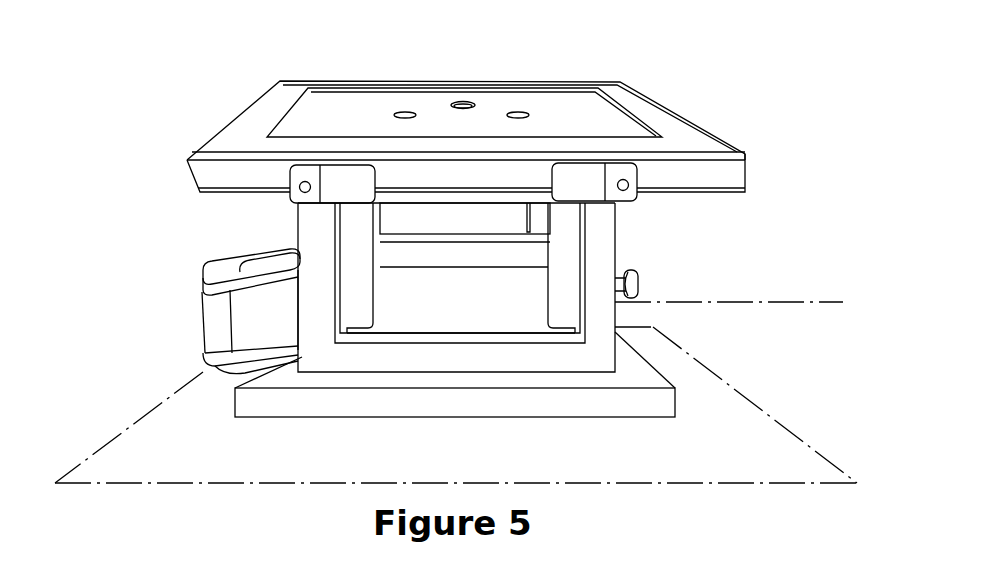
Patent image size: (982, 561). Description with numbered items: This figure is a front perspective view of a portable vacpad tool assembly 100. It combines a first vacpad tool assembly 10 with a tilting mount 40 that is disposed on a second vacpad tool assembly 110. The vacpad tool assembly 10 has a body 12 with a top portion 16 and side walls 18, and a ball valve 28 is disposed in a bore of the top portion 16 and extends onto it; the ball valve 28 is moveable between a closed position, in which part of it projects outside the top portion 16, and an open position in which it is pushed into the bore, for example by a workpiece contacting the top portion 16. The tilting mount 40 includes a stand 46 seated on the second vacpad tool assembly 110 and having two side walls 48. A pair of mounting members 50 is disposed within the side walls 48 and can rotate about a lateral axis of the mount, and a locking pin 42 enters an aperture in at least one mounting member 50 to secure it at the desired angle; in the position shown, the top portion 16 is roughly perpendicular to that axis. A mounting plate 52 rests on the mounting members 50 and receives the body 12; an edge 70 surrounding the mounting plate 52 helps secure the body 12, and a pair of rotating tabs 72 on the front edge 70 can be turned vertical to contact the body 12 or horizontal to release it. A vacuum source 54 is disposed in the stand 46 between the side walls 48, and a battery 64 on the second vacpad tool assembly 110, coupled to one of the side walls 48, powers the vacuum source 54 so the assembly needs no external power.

The vacpad tool assembly 10 is at (575, 118).
The body 12 is at (548, 112).
The top portion 16 is at (360, 108).
The side walls 18 is at (238, 108).
The ball valve 28 is at (464, 100).
The tilting mount 40 is at (716, 326).
The locking pin 42 is at (638, 281).
The stand 46 is at (603, 356).
The side walls 48 is at (607, 253).
The mounting members 50 is at (365, 302).
The mounting plate 52 is at (202, 180).
The vacuum source 54 is at (465, 322).
The battery 64 is at (215, 330).
The edge 70 is at (188, 158).
The rotating tabs 72 is at (348, 196).
The portable vacpad tool assembly 100 is at (752, 255).
The second vacpad tool assembly 110 is at (645, 403).